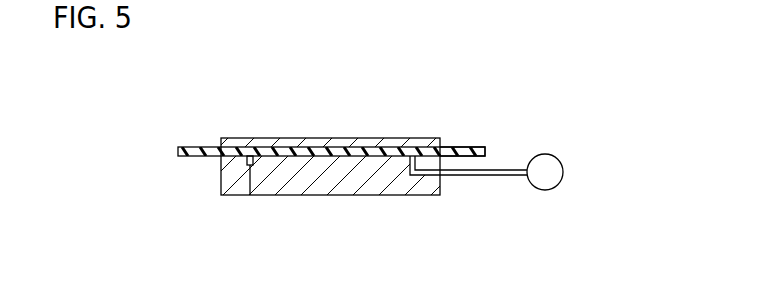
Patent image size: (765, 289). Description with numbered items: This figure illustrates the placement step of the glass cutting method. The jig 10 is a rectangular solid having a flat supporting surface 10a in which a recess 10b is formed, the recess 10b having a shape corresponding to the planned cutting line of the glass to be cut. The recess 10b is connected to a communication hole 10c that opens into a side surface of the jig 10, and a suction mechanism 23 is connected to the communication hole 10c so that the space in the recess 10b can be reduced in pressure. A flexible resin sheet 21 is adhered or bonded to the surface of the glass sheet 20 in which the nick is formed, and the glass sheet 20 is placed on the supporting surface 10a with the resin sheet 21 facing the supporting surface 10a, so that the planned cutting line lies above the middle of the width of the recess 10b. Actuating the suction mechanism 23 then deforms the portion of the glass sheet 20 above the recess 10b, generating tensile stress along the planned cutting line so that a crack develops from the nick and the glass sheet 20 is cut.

The jig 10 is at (388, 196).
The supporting surface 10a is at (252, 156).
The recess 10b is at (250, 195).
The communication hole 10c is at (442, 177).
The glass sheet 20 is at (442, 139).
The resin sheet 21 is at (485, 153).
The suction mechanism 23 is at (563, 172).